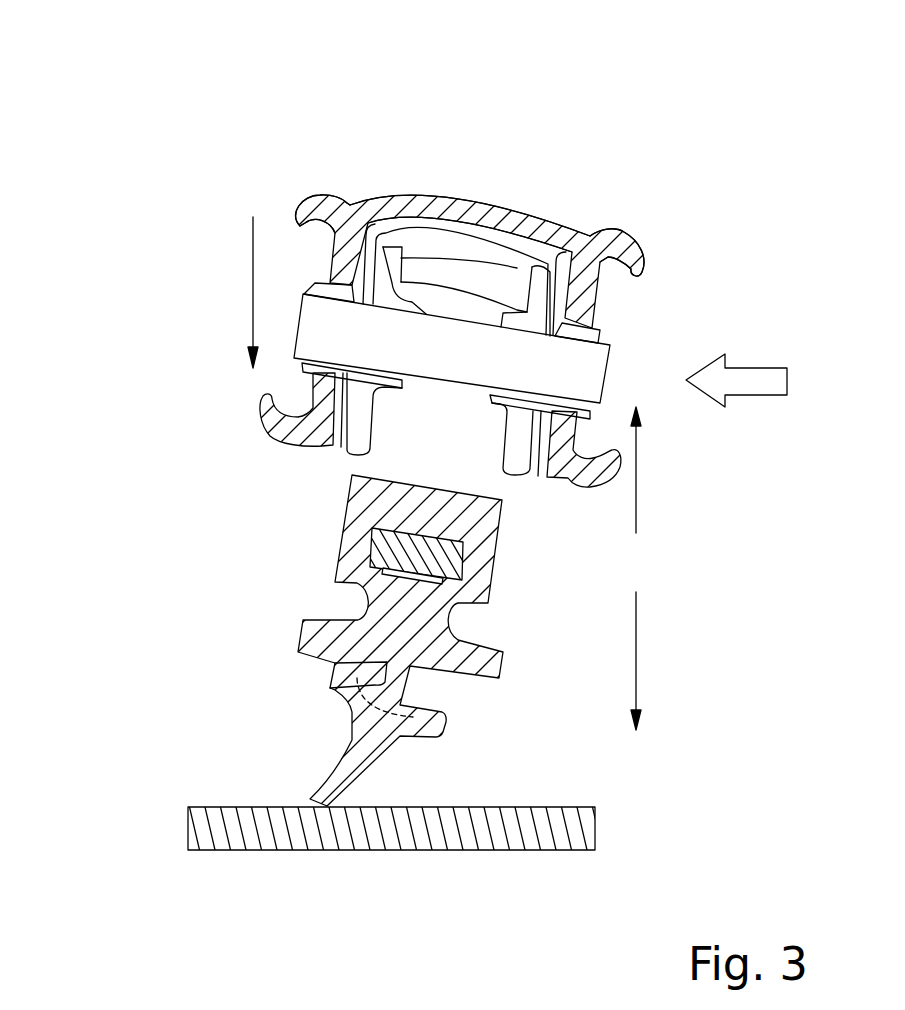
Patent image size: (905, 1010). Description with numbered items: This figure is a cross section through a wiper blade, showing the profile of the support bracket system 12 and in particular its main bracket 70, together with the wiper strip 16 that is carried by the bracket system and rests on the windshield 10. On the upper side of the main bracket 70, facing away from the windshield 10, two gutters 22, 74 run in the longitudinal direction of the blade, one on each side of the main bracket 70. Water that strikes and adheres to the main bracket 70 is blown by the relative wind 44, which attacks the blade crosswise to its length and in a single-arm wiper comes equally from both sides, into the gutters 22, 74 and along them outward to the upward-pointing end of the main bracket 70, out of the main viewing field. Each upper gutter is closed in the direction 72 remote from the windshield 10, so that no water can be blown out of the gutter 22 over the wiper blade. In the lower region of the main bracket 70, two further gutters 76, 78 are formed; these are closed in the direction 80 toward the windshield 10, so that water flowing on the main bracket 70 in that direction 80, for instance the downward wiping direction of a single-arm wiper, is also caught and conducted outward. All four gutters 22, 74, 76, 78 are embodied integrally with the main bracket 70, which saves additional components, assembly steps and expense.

The windshield 10 is at (225, 832).
The support bracket system 12 is at (512, 200).
The wiper strip 16 is at (307, 532).
The gutter 22 is at (628, 245).
The relative wind 44 is at (753, 374).
The main bracket 70 is at (423, 205).
The direction remote from the window 72 is at (636, 483).
The gutter 74 is at (313, 205).
The gutter 76 is at (288, 430).
The gutter 78 is at (590, 475).
The direction of the windshield 80 is at (253, 303).